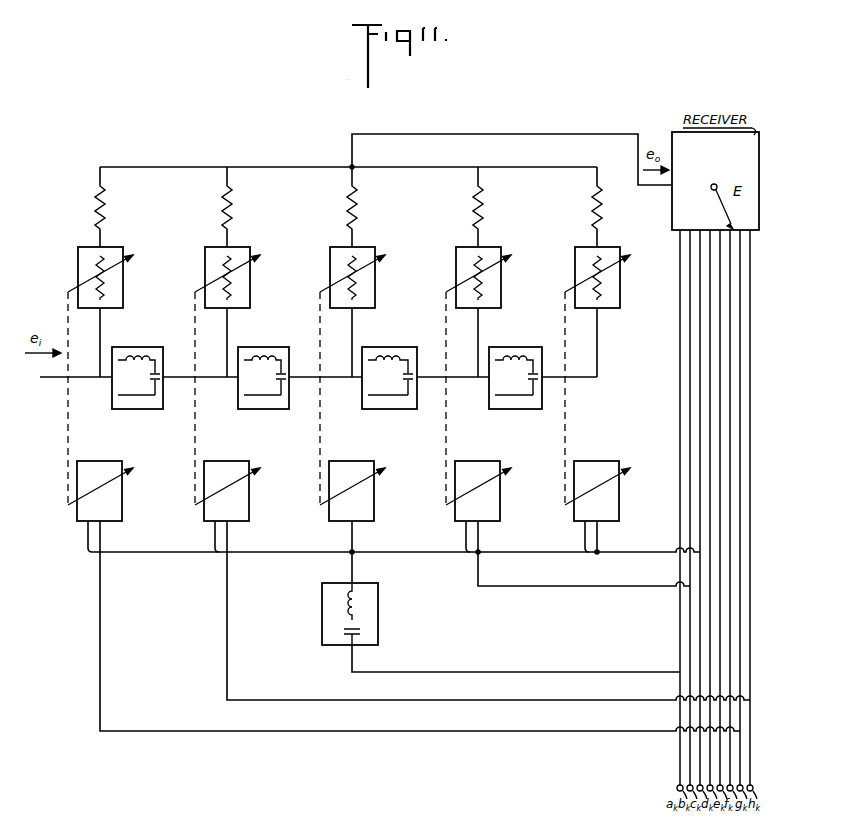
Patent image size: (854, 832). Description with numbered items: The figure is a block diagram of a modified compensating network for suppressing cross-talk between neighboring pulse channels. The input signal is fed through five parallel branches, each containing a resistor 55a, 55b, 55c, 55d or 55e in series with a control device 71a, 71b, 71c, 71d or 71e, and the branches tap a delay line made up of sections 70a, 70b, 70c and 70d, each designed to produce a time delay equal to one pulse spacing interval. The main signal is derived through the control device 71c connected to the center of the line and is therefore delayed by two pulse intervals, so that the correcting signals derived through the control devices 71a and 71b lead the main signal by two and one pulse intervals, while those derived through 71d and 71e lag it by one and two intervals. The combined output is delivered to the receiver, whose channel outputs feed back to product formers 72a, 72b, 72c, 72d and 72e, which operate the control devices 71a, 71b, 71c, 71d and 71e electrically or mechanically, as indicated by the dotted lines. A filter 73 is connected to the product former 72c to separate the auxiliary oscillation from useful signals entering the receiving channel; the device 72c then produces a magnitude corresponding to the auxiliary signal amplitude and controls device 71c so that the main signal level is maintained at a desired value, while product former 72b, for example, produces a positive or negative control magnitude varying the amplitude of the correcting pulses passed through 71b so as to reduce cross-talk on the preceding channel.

The input resistor 55a is at (104, 210).
The input resistor 55b is at (231, 210).
The input resistor 55c is at (356, 212).
The input resistor 55d is at (482, 212).
The input resistor 55e is at (601, 212).
The control device 71a is at (123, 283).
The control device 71b is at (250, 283).
The control device 71c is at (375, 283).
The control device 71d is at (501, 283).
The control device 71e is at (620, 283).
The delay line section 70a is at (143, 347).
The delay line section 70b is at (269, 347).
The delay line section 70c is at (395, 347).
The delay line section 70d is at (520, 347).
The product former 72a is at (100, 461).
The product former 72b is at (227, 461).
The product former 72c is at (352, 461).
The product former 72d is at (478, 461).
The product former 72e is at (597, 461).
The filter 73 is at (378, 616).